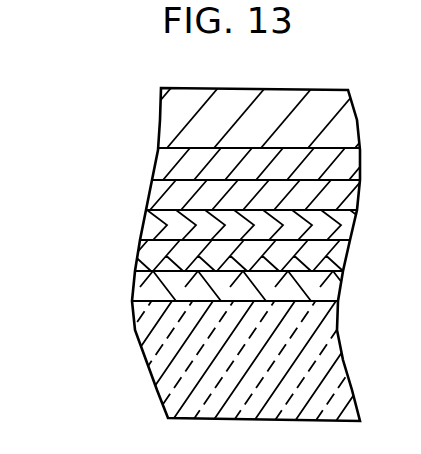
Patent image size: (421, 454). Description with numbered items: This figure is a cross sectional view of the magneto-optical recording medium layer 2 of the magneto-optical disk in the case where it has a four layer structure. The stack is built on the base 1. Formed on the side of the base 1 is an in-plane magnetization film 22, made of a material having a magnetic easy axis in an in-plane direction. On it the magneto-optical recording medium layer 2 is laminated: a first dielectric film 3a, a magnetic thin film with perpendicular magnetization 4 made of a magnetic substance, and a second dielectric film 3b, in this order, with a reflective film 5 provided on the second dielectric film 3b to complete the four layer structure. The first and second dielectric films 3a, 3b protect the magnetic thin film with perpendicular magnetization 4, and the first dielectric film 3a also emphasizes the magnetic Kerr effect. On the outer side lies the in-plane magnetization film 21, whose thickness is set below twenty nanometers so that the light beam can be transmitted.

The base 1 is at (143, 350).
The magneto-optical recording medium layer 2 is at (73, 149).
The first dielectric film 3a is at (147, 257).
The second dielectric film 3b is at (155, 198).
The magnetic thin film with perpendicular magnetization 4 is at (147, 225).
The reflective film 5 is at (157, 161).
The in-plane magnetization film 21 is at (163, 117).
The in-plane magnetization film 22 is at (134, 295).